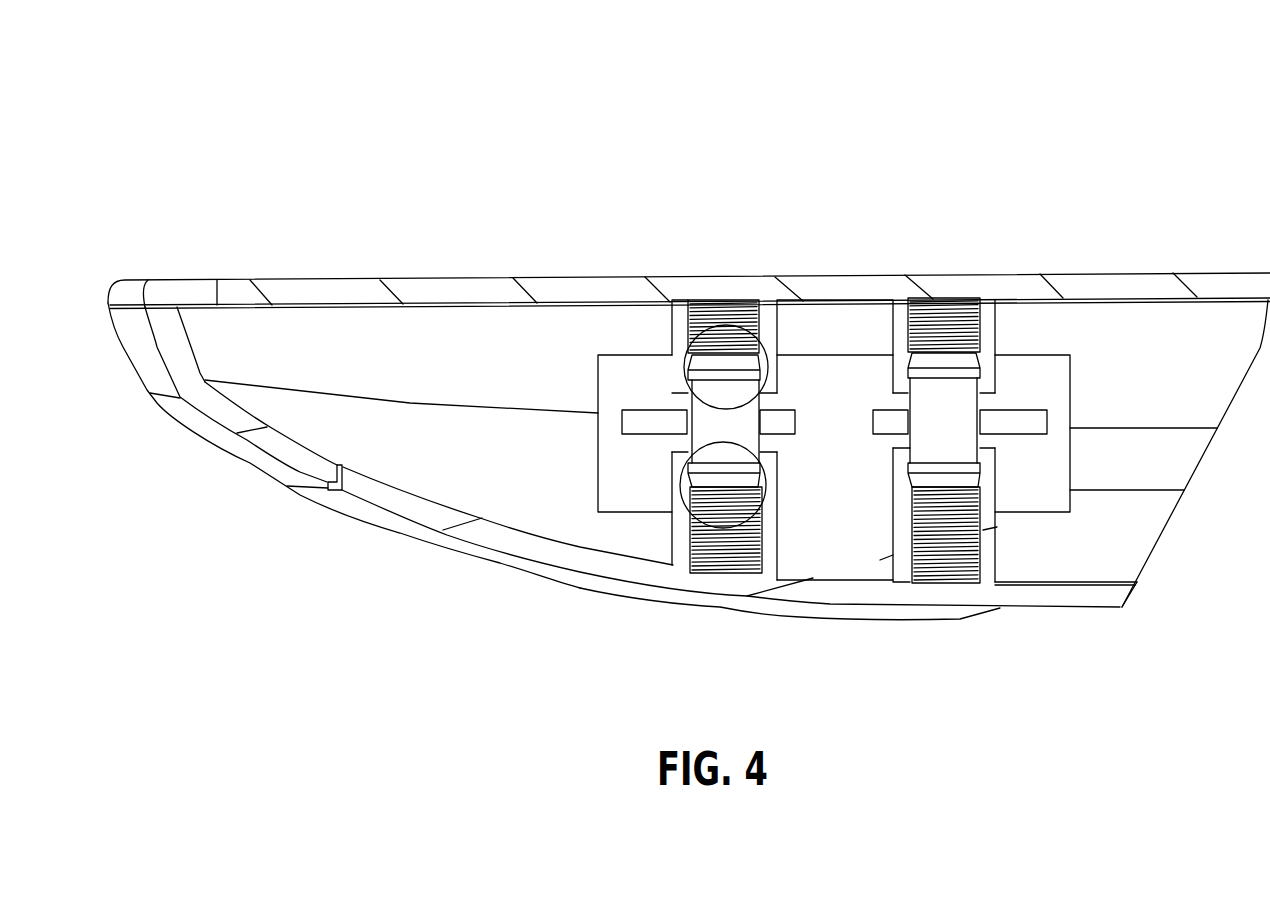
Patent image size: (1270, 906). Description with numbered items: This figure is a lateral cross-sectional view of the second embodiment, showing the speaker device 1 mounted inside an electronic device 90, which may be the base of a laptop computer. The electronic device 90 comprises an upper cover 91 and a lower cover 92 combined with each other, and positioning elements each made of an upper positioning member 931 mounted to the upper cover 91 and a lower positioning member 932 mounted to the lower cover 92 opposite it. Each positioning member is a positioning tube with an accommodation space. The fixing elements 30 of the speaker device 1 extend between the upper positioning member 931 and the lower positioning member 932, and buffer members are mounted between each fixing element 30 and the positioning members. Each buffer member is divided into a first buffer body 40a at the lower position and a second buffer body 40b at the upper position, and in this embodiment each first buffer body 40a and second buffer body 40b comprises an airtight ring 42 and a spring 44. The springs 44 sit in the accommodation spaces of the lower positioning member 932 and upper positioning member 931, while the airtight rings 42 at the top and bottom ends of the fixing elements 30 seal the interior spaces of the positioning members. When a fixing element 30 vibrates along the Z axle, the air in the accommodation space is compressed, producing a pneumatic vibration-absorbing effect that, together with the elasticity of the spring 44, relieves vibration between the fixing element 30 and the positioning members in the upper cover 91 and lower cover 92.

The speaker device 1 is at (1070, 312).
The fixing element 30 is at (700, 443).
The first buffer body 40a is at (688, 512).
The second buffer body 40b is at (766, 332).
The airtight ring 42 is at (733, 375).
The spring 44 is at (690, 332).
The electronic device 90 is at (152, 158).
The upper cover 91 is at (612, 298).
The lower cover 92 is at (877, 598).
The upper positioning member 931 is at (770, 333).
The lower positioning member 932 is at (770, 517).